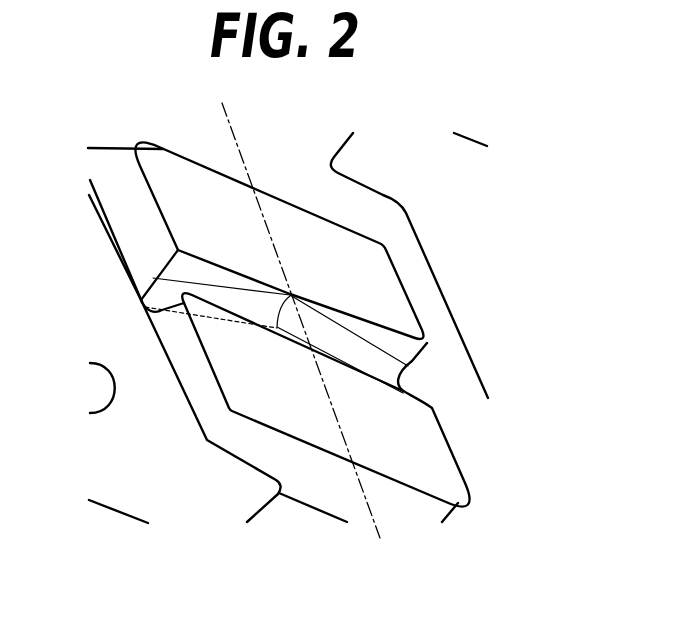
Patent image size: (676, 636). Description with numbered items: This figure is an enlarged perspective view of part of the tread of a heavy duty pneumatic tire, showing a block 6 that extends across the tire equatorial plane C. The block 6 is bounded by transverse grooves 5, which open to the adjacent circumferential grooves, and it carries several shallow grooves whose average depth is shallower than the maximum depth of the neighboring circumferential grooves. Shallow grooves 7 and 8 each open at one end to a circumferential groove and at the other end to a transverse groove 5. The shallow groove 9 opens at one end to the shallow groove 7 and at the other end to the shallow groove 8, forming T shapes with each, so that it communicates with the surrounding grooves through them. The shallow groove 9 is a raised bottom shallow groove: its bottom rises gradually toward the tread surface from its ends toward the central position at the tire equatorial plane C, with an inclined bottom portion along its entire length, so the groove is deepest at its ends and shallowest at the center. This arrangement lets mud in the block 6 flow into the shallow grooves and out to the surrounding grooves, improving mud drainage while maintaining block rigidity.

The tire equatorial plane C is at (297, 309).
The transverse grooves 5 is at (288, 178).
The block 6 is at (402, 172).
The shallow groove 7 is at (178, 350).
The shallow groove 8 is at (423, 295).
The raised bottom shallow groove 9 is at (357, 350).